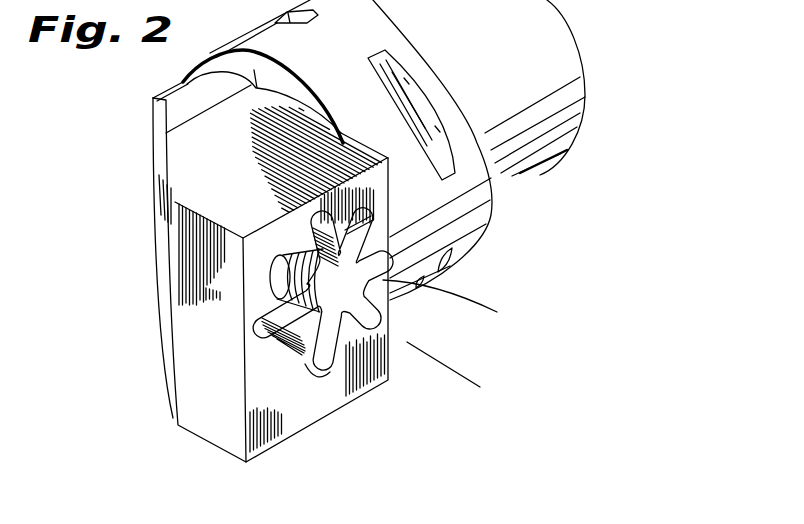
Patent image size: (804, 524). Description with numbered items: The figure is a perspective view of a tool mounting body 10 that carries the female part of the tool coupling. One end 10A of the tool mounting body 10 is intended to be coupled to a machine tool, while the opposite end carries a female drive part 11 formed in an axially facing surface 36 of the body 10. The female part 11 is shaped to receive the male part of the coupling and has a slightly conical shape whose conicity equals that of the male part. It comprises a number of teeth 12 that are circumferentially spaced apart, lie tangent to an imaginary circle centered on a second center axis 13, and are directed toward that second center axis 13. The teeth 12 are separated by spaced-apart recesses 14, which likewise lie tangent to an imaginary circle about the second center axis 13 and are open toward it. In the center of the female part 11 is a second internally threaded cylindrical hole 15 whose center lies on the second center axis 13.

The tool mounting body 10 is at (501, 246).
The end of the tool mounting body 10A is at (557, 157).
The female drive part 11 is at (278, 334).
The teeth 12 is at (278, 297).
The second center axis 13 is at (437, 360).
The recesses 14 is at (376, 318).
The second internally threaded cylindrical hole 15 is at (322, 292).
The axially facing surface 36 is at (300, 366).